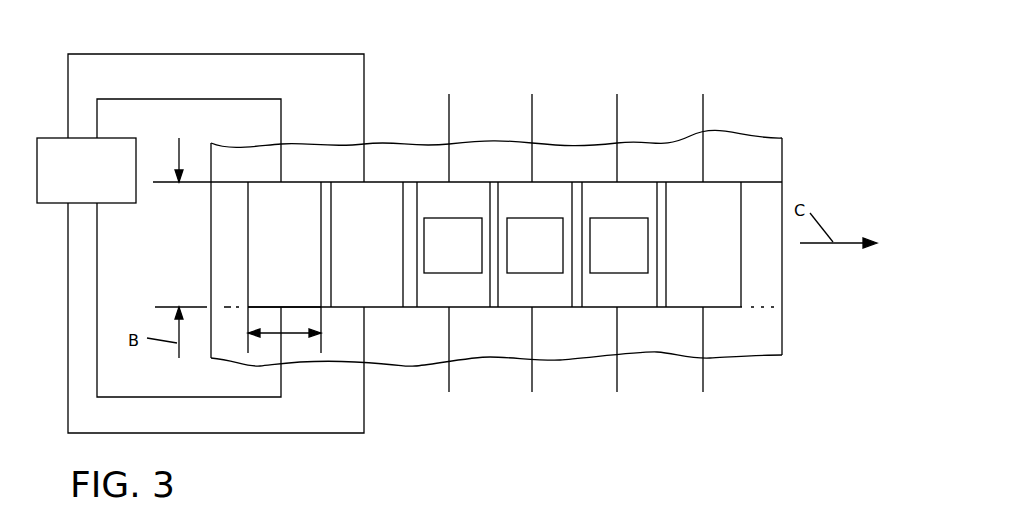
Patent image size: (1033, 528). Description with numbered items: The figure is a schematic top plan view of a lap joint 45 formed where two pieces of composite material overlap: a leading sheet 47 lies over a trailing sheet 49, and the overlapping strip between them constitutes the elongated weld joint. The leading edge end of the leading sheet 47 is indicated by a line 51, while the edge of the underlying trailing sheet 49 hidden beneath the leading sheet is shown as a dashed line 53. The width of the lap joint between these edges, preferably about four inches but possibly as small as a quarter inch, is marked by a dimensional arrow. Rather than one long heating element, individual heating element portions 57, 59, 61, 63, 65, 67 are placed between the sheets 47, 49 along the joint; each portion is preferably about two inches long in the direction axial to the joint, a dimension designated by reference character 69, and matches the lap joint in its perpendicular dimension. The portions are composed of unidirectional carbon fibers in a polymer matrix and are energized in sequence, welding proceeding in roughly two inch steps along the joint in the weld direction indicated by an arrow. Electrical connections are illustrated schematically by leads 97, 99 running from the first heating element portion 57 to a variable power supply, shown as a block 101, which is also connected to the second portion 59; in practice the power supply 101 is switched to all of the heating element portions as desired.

The lap joint 45 is at (227, 195).
The leading sheet 47 is at (731, 361).
The trailing sheet 49 is at (717, 135).
The leading edge line 51 is at (764, 181).
The dashed edge line 53 is at (227, 306).
The heating element portion 57 is at (285, 193).
The heating element portion 59 is at (372, 190).
The heating element portion 61 is at (460, 190).
The heating element portion 63 is at (547, 190).
The heating element portion 65 is at (631, 190).
The heating element portion 67 is at (710, 190).
The axial dimension of heating element portion 69 is at (287, 333).
The lead 97 is at (280, 352).
The lead 99 is at (282, 123).
The power supply 101 is at (108, 138).